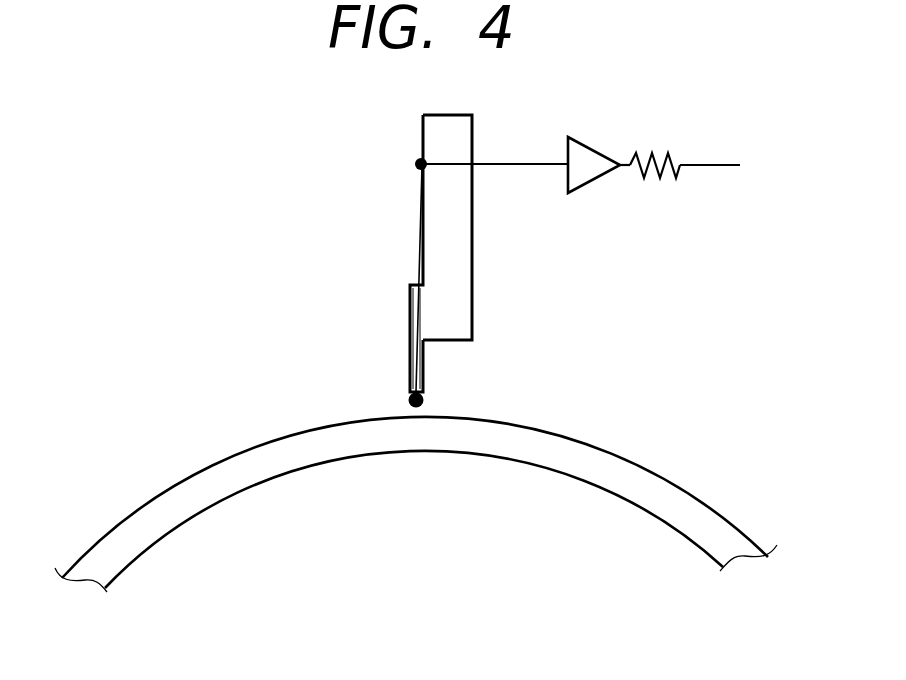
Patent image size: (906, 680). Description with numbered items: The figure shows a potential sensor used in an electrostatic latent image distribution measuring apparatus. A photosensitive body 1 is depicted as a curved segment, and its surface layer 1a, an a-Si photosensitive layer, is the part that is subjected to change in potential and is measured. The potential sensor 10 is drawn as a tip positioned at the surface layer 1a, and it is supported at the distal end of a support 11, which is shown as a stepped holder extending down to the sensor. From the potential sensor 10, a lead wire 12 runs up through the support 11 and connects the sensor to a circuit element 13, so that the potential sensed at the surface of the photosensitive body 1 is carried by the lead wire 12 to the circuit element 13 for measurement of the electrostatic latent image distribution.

The photosensitive body 1 is at (416, 459).
The surface layer 1a is at (720, 528).
The potential sensor 10 is at (425, 398).
The support 11 is at (466, 297).
The lead wire 12 is at (416, 262).
The circuit element 13 is at (634, 180).